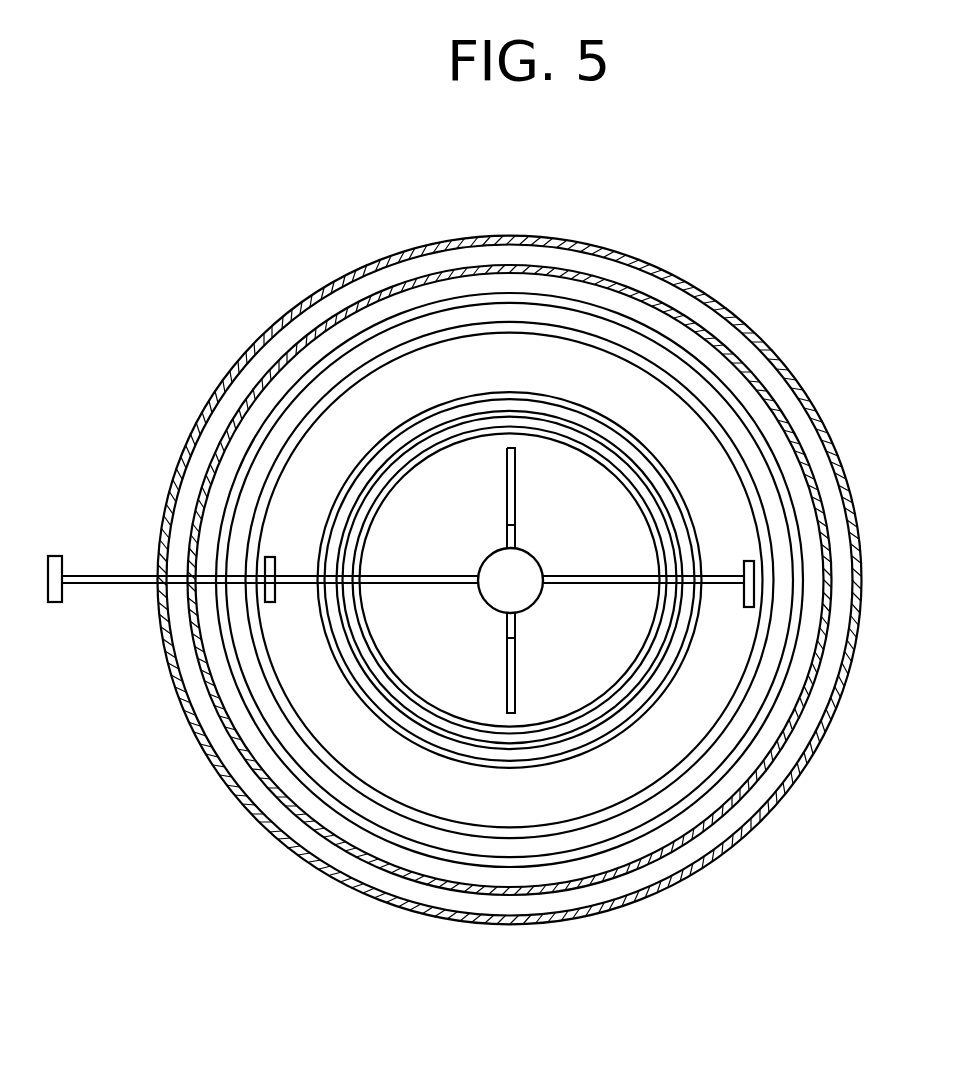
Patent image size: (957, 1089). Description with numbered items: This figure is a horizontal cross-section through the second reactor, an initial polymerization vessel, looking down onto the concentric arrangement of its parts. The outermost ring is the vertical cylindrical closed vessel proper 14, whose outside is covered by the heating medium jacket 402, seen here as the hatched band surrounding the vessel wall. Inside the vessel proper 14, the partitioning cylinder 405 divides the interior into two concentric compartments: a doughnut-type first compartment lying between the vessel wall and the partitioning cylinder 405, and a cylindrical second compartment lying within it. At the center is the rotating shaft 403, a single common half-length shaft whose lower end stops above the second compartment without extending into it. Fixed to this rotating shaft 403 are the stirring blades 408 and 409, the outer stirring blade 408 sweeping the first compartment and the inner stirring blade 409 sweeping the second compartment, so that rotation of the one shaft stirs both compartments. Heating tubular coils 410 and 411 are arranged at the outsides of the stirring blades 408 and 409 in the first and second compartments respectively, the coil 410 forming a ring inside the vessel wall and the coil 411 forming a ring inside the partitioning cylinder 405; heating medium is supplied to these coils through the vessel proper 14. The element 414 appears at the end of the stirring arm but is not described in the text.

The vessel proper 14 is at (619, 250).
The heating medium jacket 402 is at (718, 320).
The rotating shaft 403 is at (525, 565).
The partitioning cylinder 405 is at (519, 393).
The stirring blade 408 is at (271, 557).
The stirring blade 409 is at (515, 670).
The heating tubular coil 410 is at (516, 838).
The heating tubular coil 411 is at (393, 668).
The shaft end plate 414 is at (60, 556).